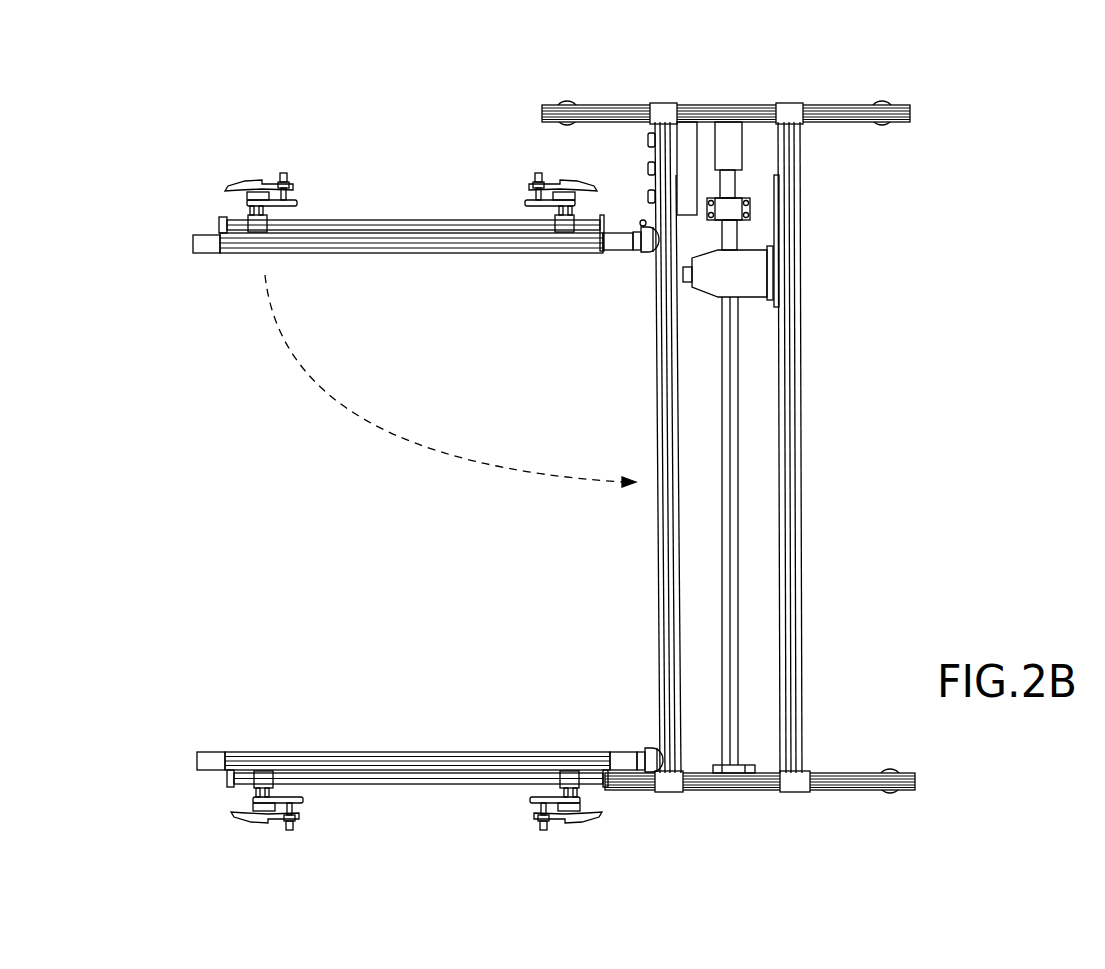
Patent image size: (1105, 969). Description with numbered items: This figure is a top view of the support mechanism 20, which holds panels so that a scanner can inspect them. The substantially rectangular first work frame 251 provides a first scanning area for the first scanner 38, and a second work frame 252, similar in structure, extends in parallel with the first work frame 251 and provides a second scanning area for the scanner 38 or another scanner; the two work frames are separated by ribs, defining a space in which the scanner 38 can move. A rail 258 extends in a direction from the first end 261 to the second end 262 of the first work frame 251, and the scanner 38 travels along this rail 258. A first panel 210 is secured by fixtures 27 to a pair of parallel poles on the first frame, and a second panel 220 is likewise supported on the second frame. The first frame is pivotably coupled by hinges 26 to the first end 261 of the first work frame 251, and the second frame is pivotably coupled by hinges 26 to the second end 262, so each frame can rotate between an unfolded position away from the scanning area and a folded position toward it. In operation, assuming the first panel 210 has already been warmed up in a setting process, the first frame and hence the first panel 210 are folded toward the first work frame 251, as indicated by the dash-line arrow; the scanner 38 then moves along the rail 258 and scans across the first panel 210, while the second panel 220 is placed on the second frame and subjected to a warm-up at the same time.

The support mechanism 20 is at (186, 197).
The hinges 26 is at (643, 224).
The fixtures 27 is at (262, 186).
The first scanner 38 is at (702, 298).
The first panel 210 is at (398, 218).
The second panel 220 is at (355, 752).
The first work frame 251 is at (655, 367).
The second work frame 252 is at (800, 343).
The rail 258 is at (722, 560).
The first end 261 is at (711, 90).
The second end 262 is at (750, 820).